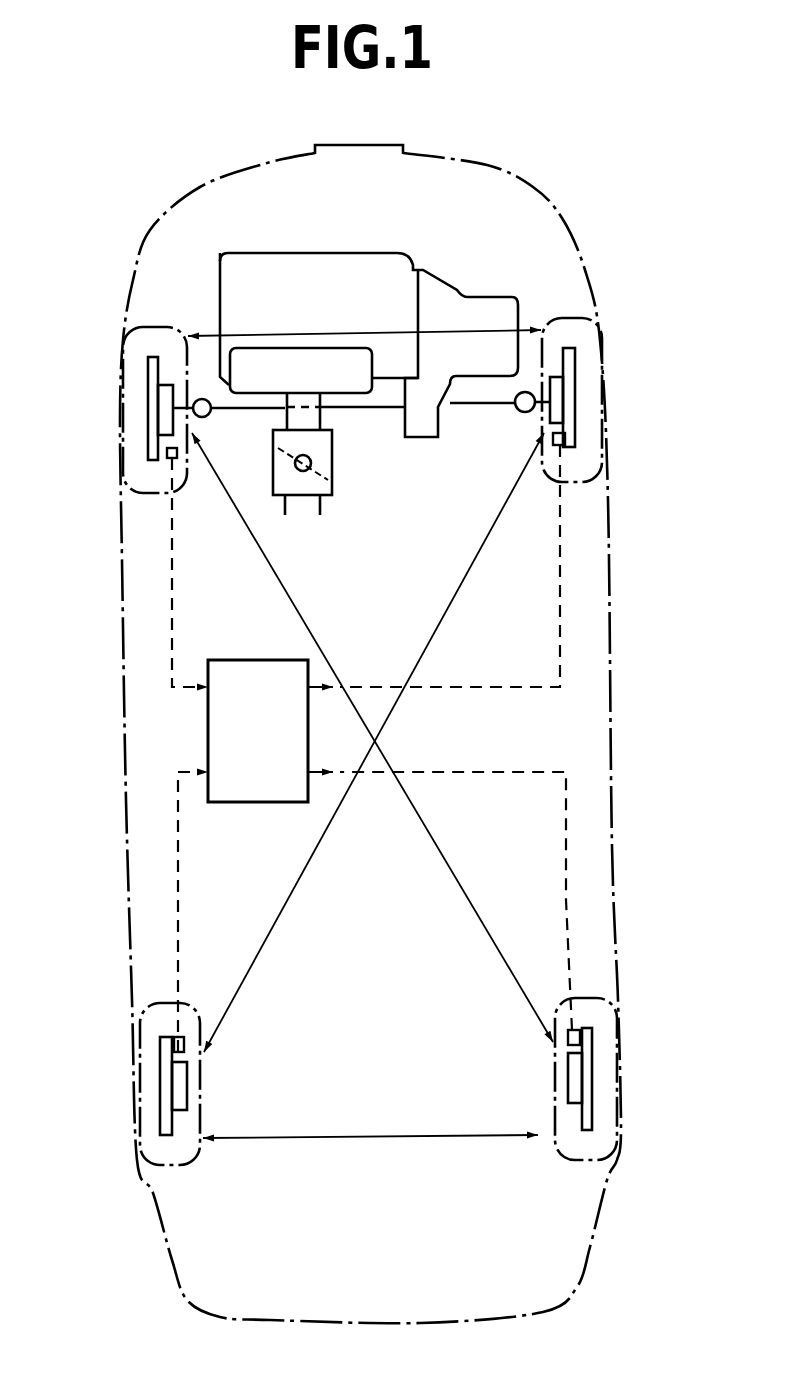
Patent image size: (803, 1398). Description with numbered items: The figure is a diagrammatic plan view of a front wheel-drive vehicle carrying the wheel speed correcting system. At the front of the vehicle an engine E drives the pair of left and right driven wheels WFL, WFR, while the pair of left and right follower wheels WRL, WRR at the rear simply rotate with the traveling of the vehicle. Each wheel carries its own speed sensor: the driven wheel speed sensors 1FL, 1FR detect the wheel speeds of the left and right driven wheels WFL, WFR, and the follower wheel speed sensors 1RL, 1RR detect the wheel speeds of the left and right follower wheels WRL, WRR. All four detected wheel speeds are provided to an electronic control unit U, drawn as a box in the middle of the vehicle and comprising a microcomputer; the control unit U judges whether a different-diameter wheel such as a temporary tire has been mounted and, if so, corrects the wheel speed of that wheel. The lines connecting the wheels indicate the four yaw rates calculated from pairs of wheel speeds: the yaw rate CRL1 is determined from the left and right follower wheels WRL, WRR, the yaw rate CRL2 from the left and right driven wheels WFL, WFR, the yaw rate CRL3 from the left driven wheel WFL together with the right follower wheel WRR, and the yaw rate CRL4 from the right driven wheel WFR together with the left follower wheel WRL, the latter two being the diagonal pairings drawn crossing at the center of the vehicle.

The engine E is at (297, 270).
The electronic control unit U is at (246, 754).
The left driven wheel WFL is at (123, 348).
The right driven wheel WFR is at (600, 340).
The left follower wheel WRL is at (137, 1150).
The right follower wheel WRR is at (617, 1133).
The driven wheel speed sensor 1FL is at (170, 458).
The driven wheel speed sensor 1FR is at (566, 438).
The follower wheel speed sensor 1RL is at (178, 1036).
The follower wheel speed sensor 1RR is at (590, 1037).
The yaw rate CRL1 is at (370, 1136).
The yaw rate CRL2 is at (364, 326).
The yaw rate CRL3 is at (372, 737).
The yaw rate CRL4 is at (374, 742).